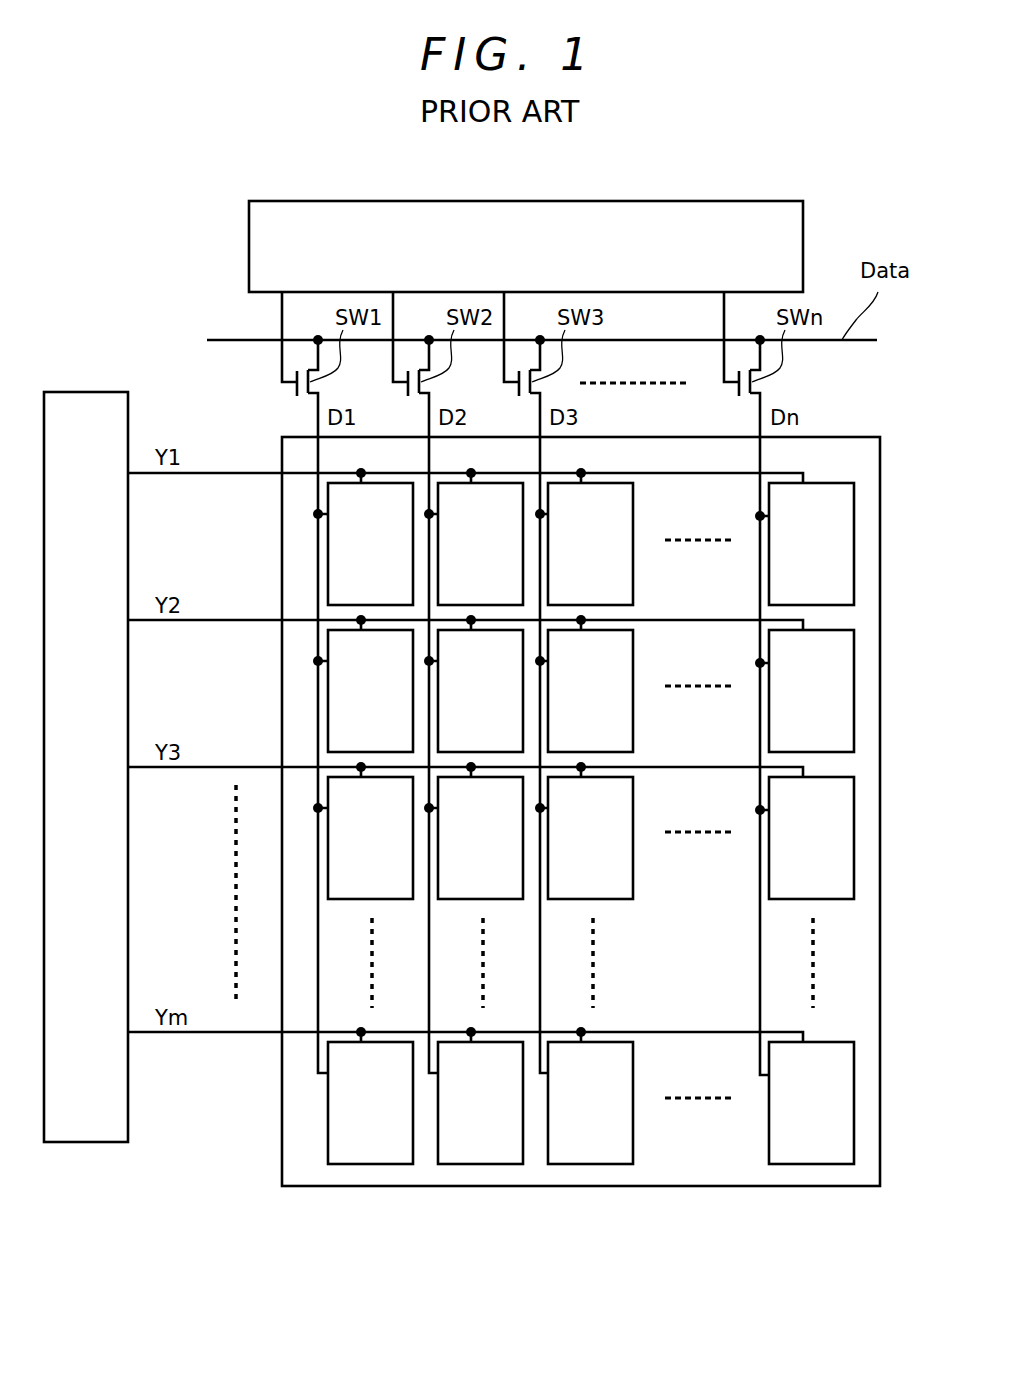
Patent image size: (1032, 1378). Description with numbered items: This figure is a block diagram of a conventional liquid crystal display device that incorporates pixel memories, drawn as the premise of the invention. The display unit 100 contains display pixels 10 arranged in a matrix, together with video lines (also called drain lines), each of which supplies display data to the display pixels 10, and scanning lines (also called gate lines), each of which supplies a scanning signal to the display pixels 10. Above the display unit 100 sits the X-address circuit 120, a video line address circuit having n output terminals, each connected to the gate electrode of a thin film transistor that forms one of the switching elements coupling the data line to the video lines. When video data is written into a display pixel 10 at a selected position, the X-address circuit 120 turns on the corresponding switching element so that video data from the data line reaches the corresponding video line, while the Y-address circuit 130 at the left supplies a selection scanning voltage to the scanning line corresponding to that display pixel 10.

The display pixel 10 is at (821, 1043).
The display unit 100 is at (830, 436).
The X-address circuit 120 is at (697, 201).
The Y-address circuit 130 is at (83, 392).